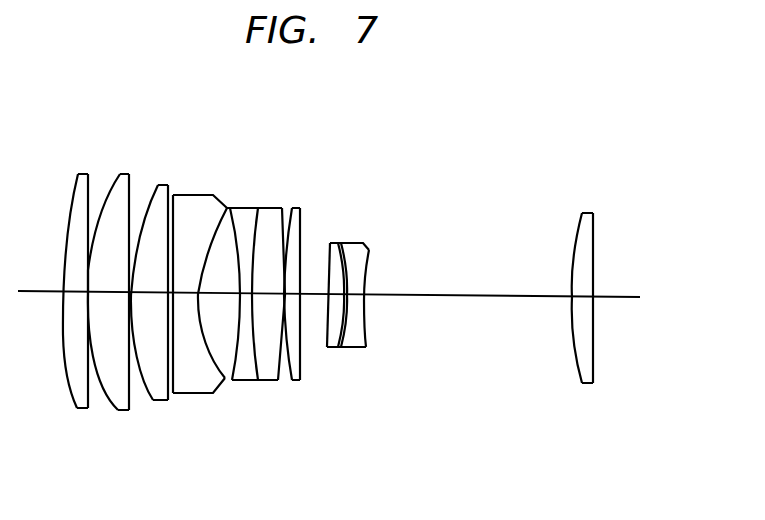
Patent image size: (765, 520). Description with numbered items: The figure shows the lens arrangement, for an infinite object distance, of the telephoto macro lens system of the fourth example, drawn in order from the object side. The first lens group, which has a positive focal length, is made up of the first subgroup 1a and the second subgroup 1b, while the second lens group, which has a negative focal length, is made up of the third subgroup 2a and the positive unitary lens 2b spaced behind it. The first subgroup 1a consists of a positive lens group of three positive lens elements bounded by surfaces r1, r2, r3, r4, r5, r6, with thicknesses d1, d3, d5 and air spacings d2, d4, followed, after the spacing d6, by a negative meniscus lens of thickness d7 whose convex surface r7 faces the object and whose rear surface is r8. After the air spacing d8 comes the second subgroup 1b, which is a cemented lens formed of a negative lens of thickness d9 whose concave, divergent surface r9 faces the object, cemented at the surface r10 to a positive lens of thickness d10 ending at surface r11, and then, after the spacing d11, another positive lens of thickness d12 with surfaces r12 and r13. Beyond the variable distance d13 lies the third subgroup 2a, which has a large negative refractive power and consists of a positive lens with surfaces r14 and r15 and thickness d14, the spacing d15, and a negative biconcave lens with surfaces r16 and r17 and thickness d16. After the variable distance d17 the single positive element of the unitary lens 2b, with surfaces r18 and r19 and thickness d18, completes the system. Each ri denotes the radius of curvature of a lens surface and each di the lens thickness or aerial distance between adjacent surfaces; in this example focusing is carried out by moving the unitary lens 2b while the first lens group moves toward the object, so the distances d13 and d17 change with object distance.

The first subgroup 1a is at (252, 128).
The second subgroup 1b is at (385, 128).
The third subgroup 2a is at (500, 128).
The positive unitary lens 2b is at (550, 128).
The radius of curvature of first lens surface r1 is at (78, 174).
The radius of curvature of second lens surface r2 is at (88, 174).
The radius of curvature of third lens surface r3 is at (120, 174).
The radius of curvature of fourth lens surface r4 is at (129, 174).
The radius of curvature of fifth lens surface r5 is at (158, 185).
The radius of curvature of sixth lens surface r6 is at (168, 185).
The radius of curvature of seventh lens surface r7 is at (173, 195).
The radius of curvature of eighth lens surface r8 is at (227, 208).
The radius of curvature of ninth lens surface r9 is at (232, 208).
The radius of curvature of tenth lens surface r10 is at (258, 208).
The radius of curvature of eleventh lens surface r11 is at (282, 208).
The radius of curvature of twelfth lens surface r12 is at (292, 208).
The radius of curvature of thirteenth lens surface r13 is at (300, 208).
The radius of curvature of fourteenth lens surface r14 is at (330, 243).
The radius of curvature of fifteenth lens surface r15 is at (338, 243).
The radius of curvature of sixteenth lens surface r16 is at (363, 243).
The radius of curvature of seventeenth lens surface r17 is at (369, 250).
The radius of curvature of eighteenth lens surface r18 is at (582, 213).
The radius of curvature of nineteenth lens surface r19 is at (593, 213).
The lens thickness d1 is at (71, 292).
The aerial distance d2 is at (83, 292).
The lens thickness d3 is at (108, 293).
The aerial distance d4 is at (130, 293).
The lens thickness d5 is at (158, 186).
The aerial distance d6 is at (170, 293).
The lens thickness d7 is at (185, 293).
The aerial distance d8 is at (215, 294).
The lens thickness d9 is at (247, 294).
The lens thickness d10 is at (270, 294).
The aerial distance d11 is at (288, 294).
The lens thickness d12 is at (298, 294).
The aerial distance d13 is at (318, 294).
The lens thickness d14 is at (340, 294).
The aerial distance d15 is at (345, 294).
The lens thickness d16 is at (360, 295).
The aerial distance d17 is at (487, 296).
The lens thickness d18 is at (579, 297).